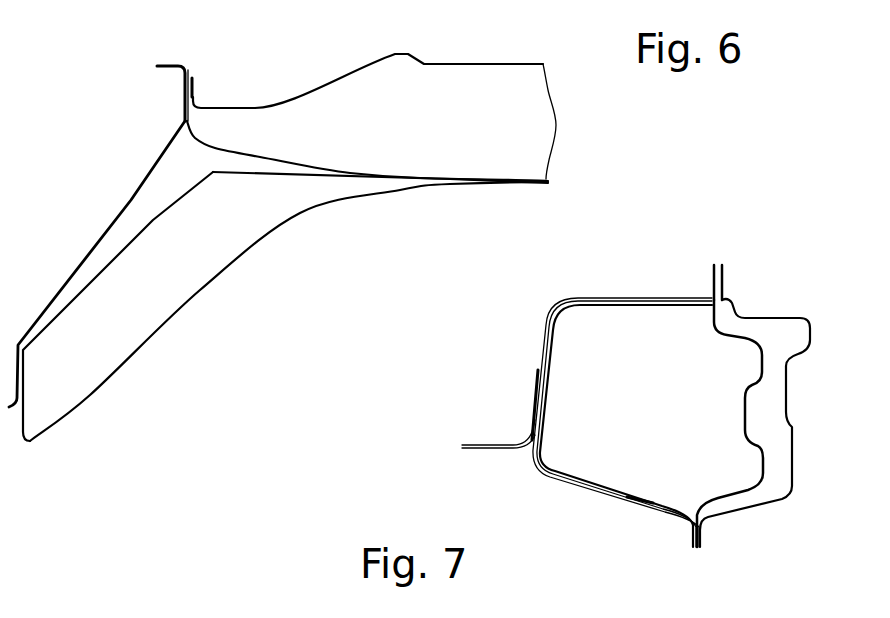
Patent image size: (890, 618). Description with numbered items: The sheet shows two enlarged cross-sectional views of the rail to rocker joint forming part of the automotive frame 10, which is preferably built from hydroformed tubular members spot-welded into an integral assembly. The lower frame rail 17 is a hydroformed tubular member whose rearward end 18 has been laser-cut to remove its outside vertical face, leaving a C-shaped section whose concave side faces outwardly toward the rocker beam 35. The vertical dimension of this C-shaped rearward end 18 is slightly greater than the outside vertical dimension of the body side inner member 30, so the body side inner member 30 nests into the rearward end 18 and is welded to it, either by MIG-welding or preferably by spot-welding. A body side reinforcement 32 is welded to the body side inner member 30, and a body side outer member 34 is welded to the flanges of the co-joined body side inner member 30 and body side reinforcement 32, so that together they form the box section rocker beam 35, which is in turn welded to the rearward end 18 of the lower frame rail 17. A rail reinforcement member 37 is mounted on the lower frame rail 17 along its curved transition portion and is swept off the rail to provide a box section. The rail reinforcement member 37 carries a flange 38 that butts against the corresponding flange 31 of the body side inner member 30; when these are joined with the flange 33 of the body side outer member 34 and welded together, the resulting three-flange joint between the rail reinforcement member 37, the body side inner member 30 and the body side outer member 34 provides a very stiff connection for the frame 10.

In FIG. 6, the automotive frame 10 is at (117, 65).
In FIG. 6, the lower frame rail 17 is at (200, 290).
In FIG. 6, the rearward end 18 is at (403, 188).
In FIG. 7, the rearward end 18 is at (545, 345).
In FIG. 6, the body side inner member 30 is at (348, 168).
In FIG. 7, the body side inner member 30 is at (663, 298).
In FIG. 6, the flange 31 is at (189, 71).
In FIG. 7, the body side reinforcement 32 is at (740, 400).
In FIG. 6, the flange 33 is at (194, 88).
In FIG. 6, the body side outer member 34 is at (452, 62).
In FIG. 7, the body side outer member 34 is at (790, 407).
In FIG. 6, the rocker beam 35 is at (588, 129).
In FIG. 7, the rocker beam 35 is at (591, 522).
In FIG. 6, the rail reinforcement member 37 is at (130, 197).
In FIG. 6, the flange 38 is at (180, 98).